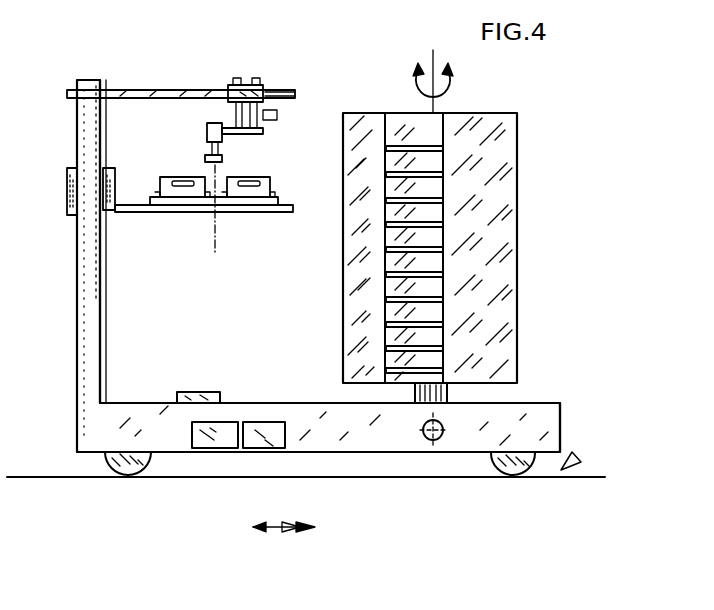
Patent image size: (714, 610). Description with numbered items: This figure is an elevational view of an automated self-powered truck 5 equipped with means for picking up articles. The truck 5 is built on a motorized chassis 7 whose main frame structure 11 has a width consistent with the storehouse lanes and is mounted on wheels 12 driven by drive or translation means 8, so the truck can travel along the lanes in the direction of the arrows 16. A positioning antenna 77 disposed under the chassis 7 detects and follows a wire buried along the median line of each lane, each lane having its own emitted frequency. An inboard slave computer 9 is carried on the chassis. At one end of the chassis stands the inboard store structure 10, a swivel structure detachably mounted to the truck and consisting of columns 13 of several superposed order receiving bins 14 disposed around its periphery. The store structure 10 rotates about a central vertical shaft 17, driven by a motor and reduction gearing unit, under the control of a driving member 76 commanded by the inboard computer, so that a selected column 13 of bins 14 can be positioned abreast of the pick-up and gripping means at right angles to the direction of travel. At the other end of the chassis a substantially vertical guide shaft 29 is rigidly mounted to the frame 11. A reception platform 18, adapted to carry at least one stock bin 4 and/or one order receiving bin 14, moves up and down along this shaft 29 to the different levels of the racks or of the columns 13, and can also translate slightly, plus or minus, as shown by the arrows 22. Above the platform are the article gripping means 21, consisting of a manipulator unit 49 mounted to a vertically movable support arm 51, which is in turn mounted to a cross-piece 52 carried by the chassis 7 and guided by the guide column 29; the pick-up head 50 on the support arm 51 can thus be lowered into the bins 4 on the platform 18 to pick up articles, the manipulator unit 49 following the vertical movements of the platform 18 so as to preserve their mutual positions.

The stock bin 4 is at (185, 183).
The self-powered truck 5 is at (78, 353).
The motorized chassis 7 is at (550, 432).
The drive or translation means 8 is at (142, 472).
The inboard slave computer 9 is at (210, 391).
The inboard store structure 10 is at (522, 182).
The main frame structure 11 is at (378, 440).
The wheels 12 is at (512, 480).
The column 13 is at (410, 124).
The order receiving bin 14 is at (268, 185).
The arrows of direction of travel 16 is at (272, 531).
The central vertical shaft 17 is at (449, 397).
The reception platform 18 is at (150, 197).
The gripping means 21 is at (210, 73).
The arrows of platform translation 22 is at (223, 228).
The guide shaft 29 is at (88, 262).
The manipulator unit 49 is at (141, 82).
The pick-up head 50 is at (216, 114).
The support arm 51 is at (264, 128).
The cross-piece 52 is at (190, 98).
The driving member 76 is at (445, 430).
The positioning antenna 77 is at (570, 456).